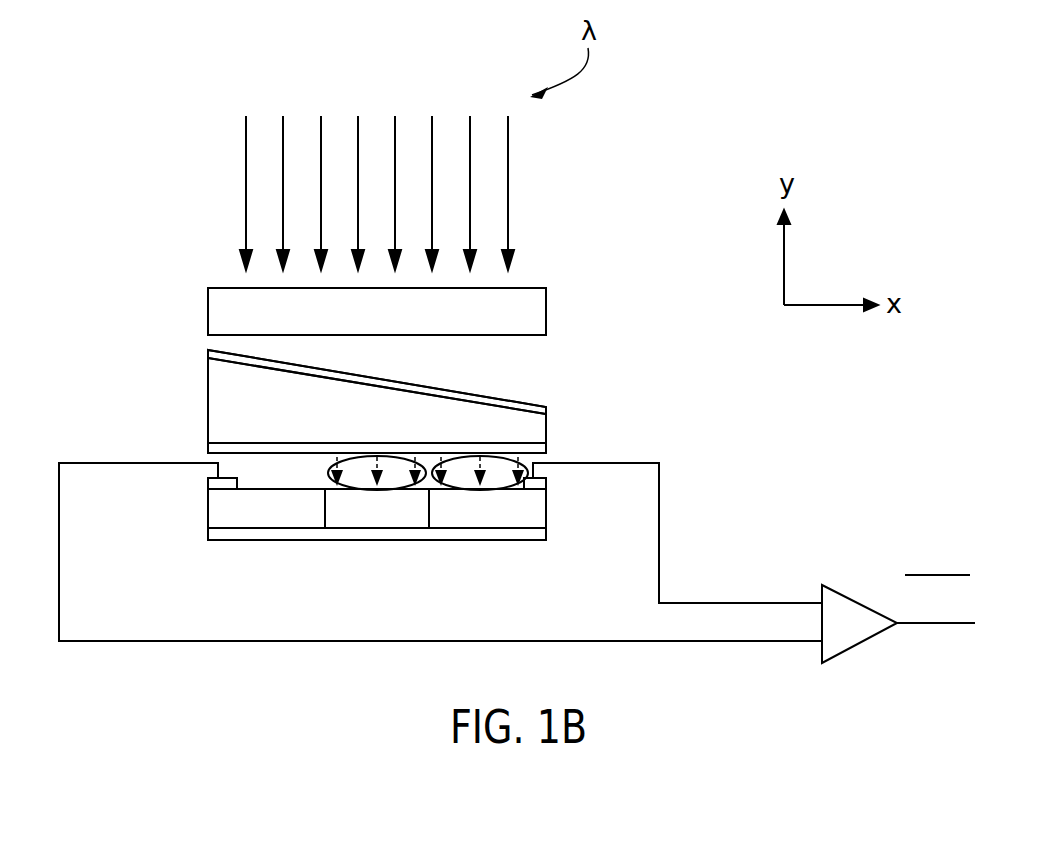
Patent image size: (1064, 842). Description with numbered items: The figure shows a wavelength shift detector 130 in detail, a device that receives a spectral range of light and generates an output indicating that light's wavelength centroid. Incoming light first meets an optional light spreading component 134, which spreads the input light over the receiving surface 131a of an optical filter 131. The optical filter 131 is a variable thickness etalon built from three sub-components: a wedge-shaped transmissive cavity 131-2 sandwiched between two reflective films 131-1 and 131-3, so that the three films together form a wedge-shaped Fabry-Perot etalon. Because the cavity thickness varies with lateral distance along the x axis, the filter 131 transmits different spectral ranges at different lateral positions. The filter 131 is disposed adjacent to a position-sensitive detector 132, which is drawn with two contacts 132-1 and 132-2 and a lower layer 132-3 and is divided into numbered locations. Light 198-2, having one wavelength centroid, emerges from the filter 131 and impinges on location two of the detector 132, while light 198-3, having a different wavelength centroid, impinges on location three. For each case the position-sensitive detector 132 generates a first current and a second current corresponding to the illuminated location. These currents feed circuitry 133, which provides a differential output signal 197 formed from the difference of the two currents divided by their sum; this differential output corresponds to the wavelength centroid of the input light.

The wavelength shift detector 130 is at (565, 265).
The light spreading component 134 is at (213, 314).
The optical filter 131 is at (364, 389).
The reflective film 131-1 is at (213, 356).
The wedge-shaped transmissive cavity 131-2 is at (213, 410).
The reflective film 131-3 is at (213, 447).
The receiving surface 131a is at (533, 412).
The position-sensitive detector 132 is at (213, 508).
The first contact of photodetector 132-1 is at (213, 481).
The second contact of photodetector 132-2 is at (538, 483).
The bottom layer of photodetector 132-3 is at (213, 537).
The light 198-2 is at (315, 500).
The light 198-3 is at (424, 492).
The circuitry 133 is at (843, 535).
The differential output signal 197 is at (930, 625).